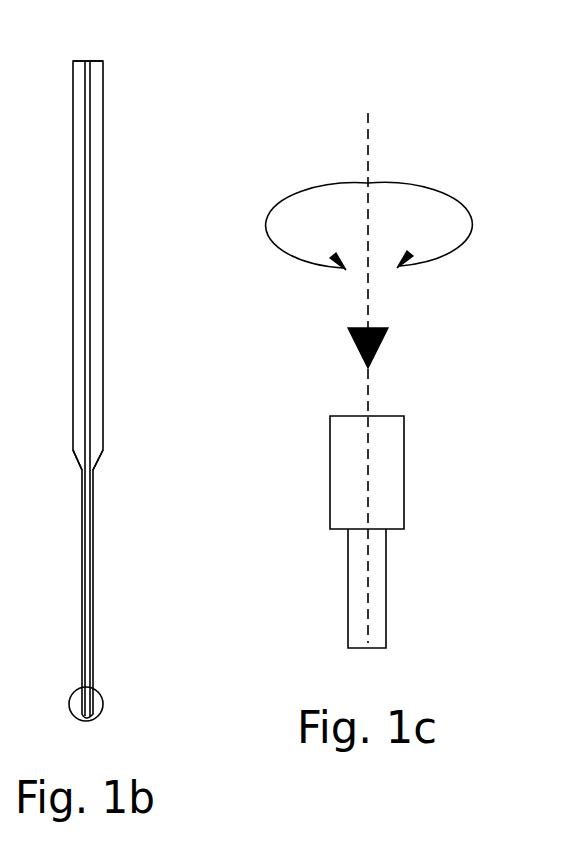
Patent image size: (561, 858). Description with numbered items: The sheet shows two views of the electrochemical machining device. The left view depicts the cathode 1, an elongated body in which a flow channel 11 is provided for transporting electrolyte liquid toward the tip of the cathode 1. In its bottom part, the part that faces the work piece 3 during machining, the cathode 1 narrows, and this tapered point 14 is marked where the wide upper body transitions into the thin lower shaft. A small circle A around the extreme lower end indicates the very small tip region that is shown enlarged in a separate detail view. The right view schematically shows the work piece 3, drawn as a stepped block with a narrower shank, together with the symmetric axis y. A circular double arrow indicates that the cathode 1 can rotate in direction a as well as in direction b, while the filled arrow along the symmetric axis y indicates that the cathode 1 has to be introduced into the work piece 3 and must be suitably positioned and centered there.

In FIG. 1B, the cathode 1 is at (99, 194).
In FIG. 1B, the flow channel 11 is at (88, 61).
In FIG. 1B, the tapered point 14 is at (92, 470).
In FIG. 1B, the circle indicating enlarged section A is at (101, 697).
In FIG. 1C, the symmetric axis y is at (368, 117).
In FIG. 1C, the rotation direction a is at (317, 247).
In FIG. 1C, the rotation direction b is at (420, 246).
In FIG. 1C, the work piece 3 is at (395, 463).